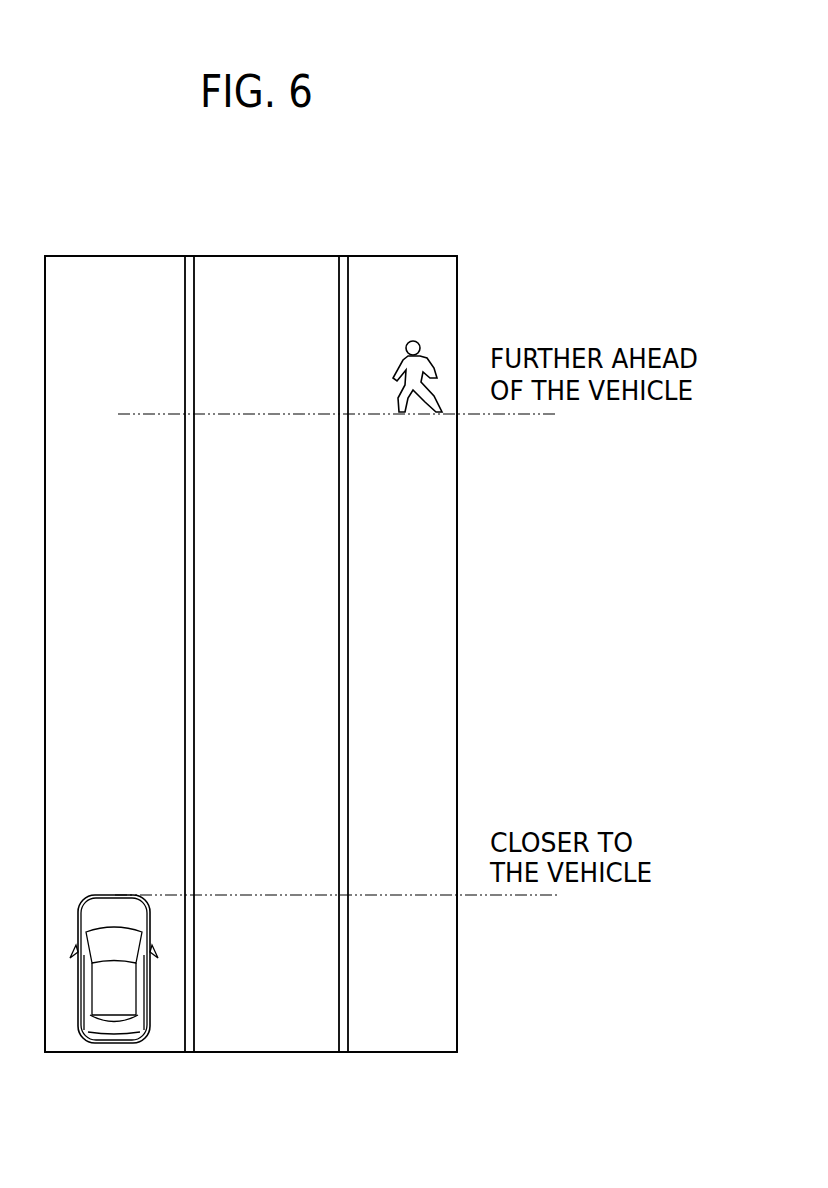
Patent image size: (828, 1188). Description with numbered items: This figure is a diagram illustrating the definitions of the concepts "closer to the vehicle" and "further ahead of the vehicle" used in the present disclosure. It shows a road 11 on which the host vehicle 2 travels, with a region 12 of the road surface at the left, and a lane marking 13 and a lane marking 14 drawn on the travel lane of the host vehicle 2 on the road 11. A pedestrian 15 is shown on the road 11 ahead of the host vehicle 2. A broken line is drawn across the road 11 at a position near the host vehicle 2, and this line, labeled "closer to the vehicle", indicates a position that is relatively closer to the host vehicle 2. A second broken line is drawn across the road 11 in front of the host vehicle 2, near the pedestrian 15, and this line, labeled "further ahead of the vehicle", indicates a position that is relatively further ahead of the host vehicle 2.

The host vehicle 2 is at (117, 1043).
The road 11 is at (265, 238).
The road surface region 12 is at (111, 283).
The lane marking 13 is at (188, 257).
The lane marking 14 is at (344, 256).
The pedestrian 15 is at (417, 341).